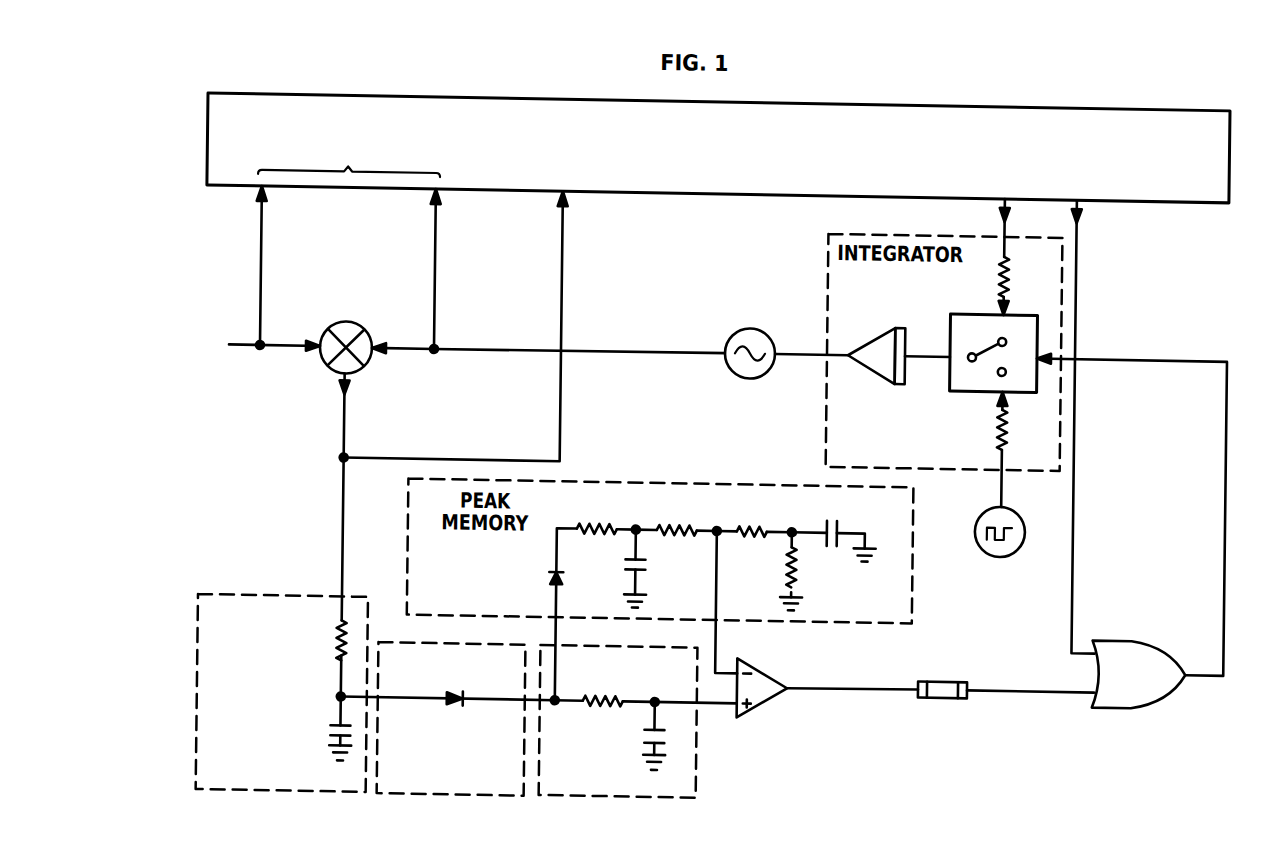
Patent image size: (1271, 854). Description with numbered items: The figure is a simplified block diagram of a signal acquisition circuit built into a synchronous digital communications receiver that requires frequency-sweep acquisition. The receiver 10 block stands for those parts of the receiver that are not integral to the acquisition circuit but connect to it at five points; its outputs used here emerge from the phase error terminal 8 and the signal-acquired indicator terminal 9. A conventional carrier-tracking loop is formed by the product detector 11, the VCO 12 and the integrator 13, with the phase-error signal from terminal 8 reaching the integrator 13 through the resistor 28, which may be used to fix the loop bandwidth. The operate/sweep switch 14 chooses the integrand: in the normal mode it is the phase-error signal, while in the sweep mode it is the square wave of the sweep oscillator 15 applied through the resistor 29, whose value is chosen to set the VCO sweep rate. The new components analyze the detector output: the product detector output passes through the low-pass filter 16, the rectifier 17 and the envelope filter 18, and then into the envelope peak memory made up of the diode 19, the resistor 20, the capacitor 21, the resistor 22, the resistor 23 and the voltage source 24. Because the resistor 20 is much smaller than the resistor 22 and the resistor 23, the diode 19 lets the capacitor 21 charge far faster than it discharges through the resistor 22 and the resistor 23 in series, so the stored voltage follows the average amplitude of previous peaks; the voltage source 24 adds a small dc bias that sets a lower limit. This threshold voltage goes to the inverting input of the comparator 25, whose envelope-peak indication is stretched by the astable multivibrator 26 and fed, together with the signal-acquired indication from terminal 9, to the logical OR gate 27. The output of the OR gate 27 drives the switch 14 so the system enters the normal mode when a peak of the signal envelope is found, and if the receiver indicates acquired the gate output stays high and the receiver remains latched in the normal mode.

The phase error terminal 8 is at (1012, 209).
The signal-acquired indicator terminal 9 is at (1084, 208).
The receiver 10 is at (809, 161).
The product detector 11 is at (352, 309).
The VCO 12 is at (756, 312).
The integrator 13 is at (872, 378).
The operate/sweep switch 14 is at (955, 385).
The sweep oscillator 15 is at (993, 553).
The low-pass filter 16 is at (201, 637).
The rectifier 17 is at (417, 794).
The envelope filter 18 is at (706, 791).
The diode 19 is at (552, 572).
The resistor 20 is at (603, 542).
The capacitor 21 is at (658, 561).
The resistor 22 is at (683, 514).
The resistor 23 is at (759, 540).
The voltage source 24 is at (820, 569).
The comparator 25 is at (772, 701).
The astable multivibrator 26 is at (946, 692).
The logical OR gate 27 is at (1126, 700).
The resistor 28 is at (996, 272).
The resistor 29 is at (995, 425).